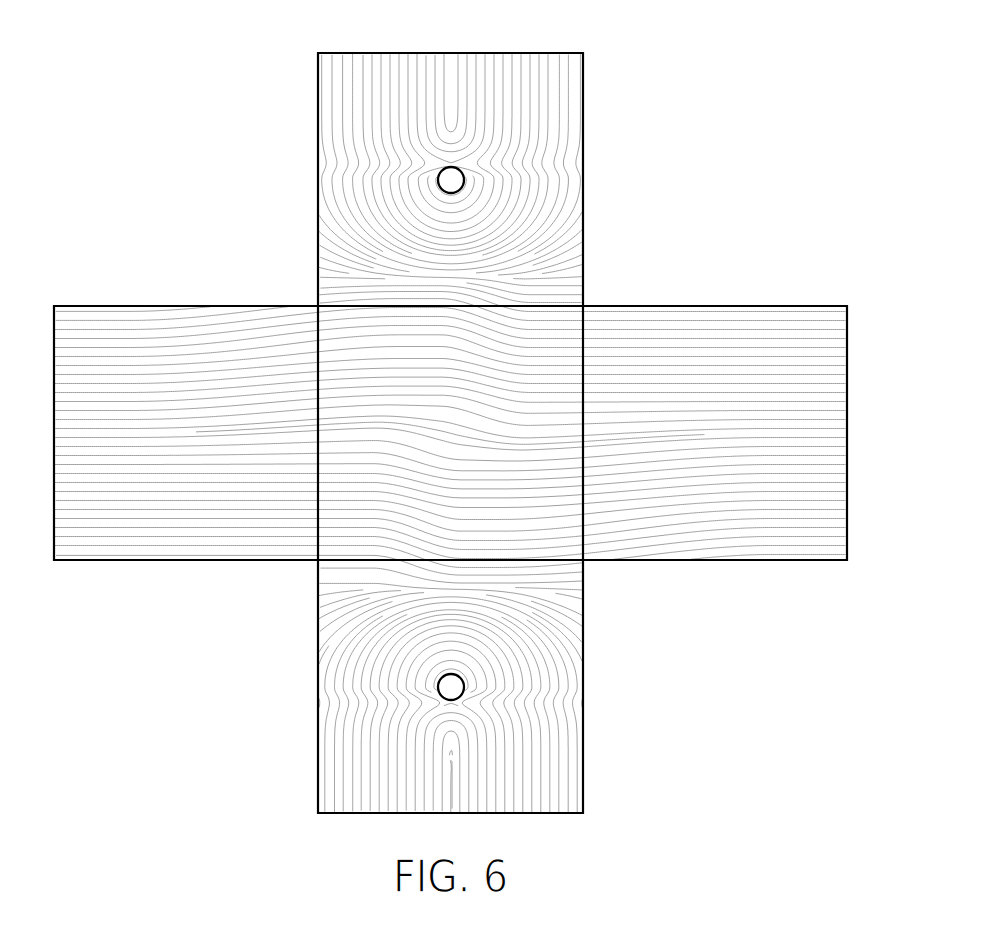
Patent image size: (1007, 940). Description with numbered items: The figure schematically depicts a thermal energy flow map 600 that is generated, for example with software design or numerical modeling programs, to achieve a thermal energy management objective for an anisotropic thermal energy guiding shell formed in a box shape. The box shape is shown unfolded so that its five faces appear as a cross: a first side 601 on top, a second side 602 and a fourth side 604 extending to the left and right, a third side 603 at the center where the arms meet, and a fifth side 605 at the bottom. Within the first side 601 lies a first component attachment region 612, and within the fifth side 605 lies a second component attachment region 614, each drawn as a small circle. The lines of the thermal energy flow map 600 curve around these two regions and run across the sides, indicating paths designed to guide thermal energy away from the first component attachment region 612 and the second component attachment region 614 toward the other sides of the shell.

The thermal energy flow map 600 is at (450, 433).
The first side 601 is at (577, 180).
The second side 602 is at (170, 320).
The third side 603 is at (347, 535).
The fourth side 604 is at (750, 320).
The fifth side 605 is at (562, 763).
The first component attachment region 612 is at (464, 178).
The second component attachment region 614 is at (464, 686).